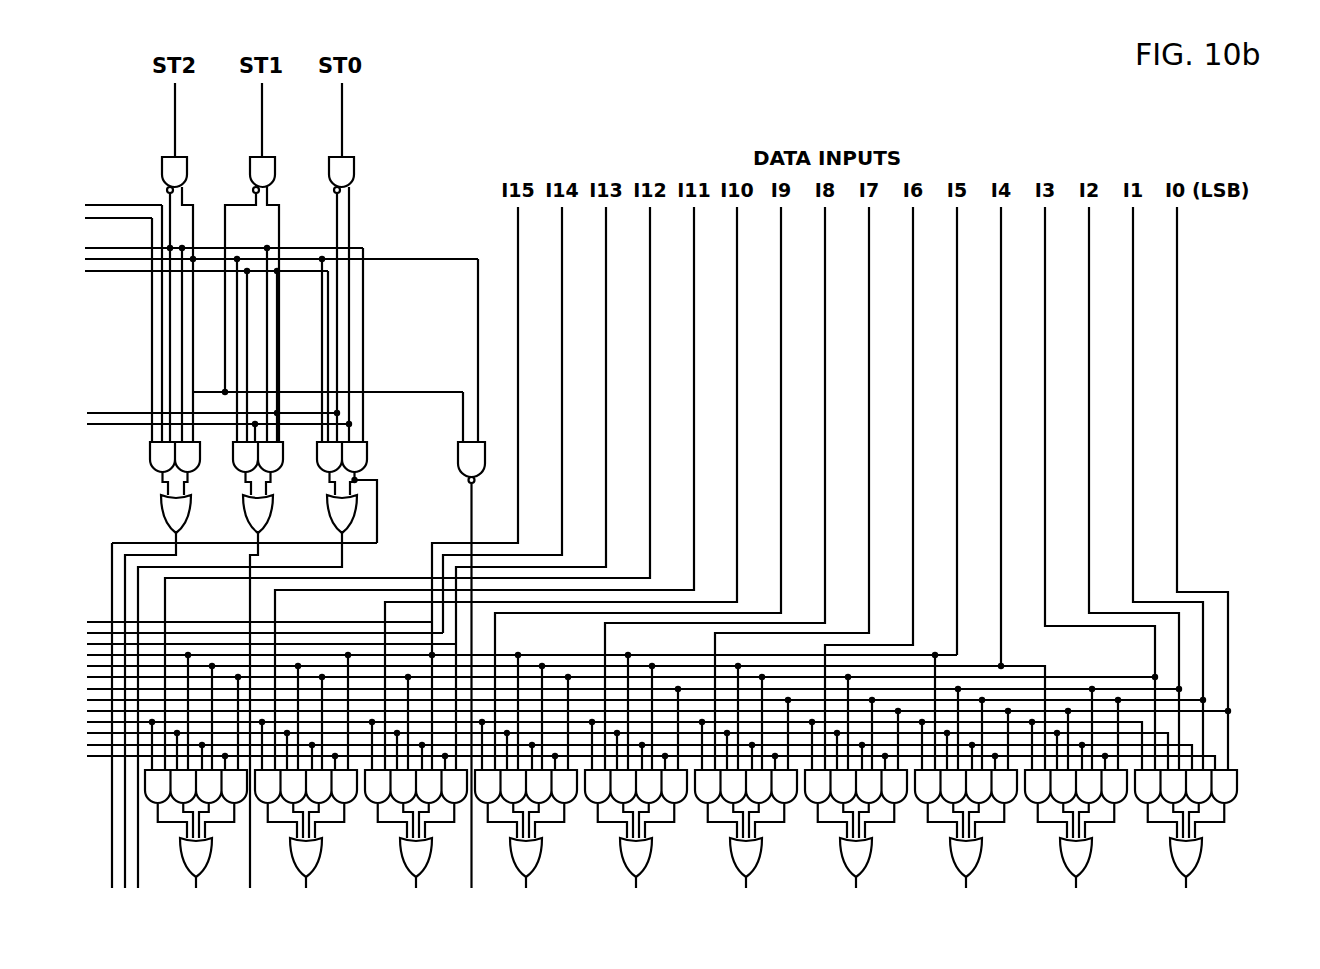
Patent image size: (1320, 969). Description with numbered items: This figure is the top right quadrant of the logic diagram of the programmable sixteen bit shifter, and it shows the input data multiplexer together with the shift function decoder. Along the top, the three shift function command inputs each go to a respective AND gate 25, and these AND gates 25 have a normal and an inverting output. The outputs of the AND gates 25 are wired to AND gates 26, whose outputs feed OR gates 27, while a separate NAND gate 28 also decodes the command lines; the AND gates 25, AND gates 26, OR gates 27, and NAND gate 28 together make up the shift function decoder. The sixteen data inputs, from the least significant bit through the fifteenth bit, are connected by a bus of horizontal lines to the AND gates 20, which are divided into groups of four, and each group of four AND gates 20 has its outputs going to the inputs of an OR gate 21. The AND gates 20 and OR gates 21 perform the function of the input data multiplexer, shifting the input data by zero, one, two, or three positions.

The AND gates 20 is at (1112, 810).
The OR gate 21 is at (1169, 857).
The AND gate 25 is at (362, 165).
The AND gates 26 is at (322, 471).
The OR gates 27 is at (326, 518).
The NAND gate 28 is at (458, 466).